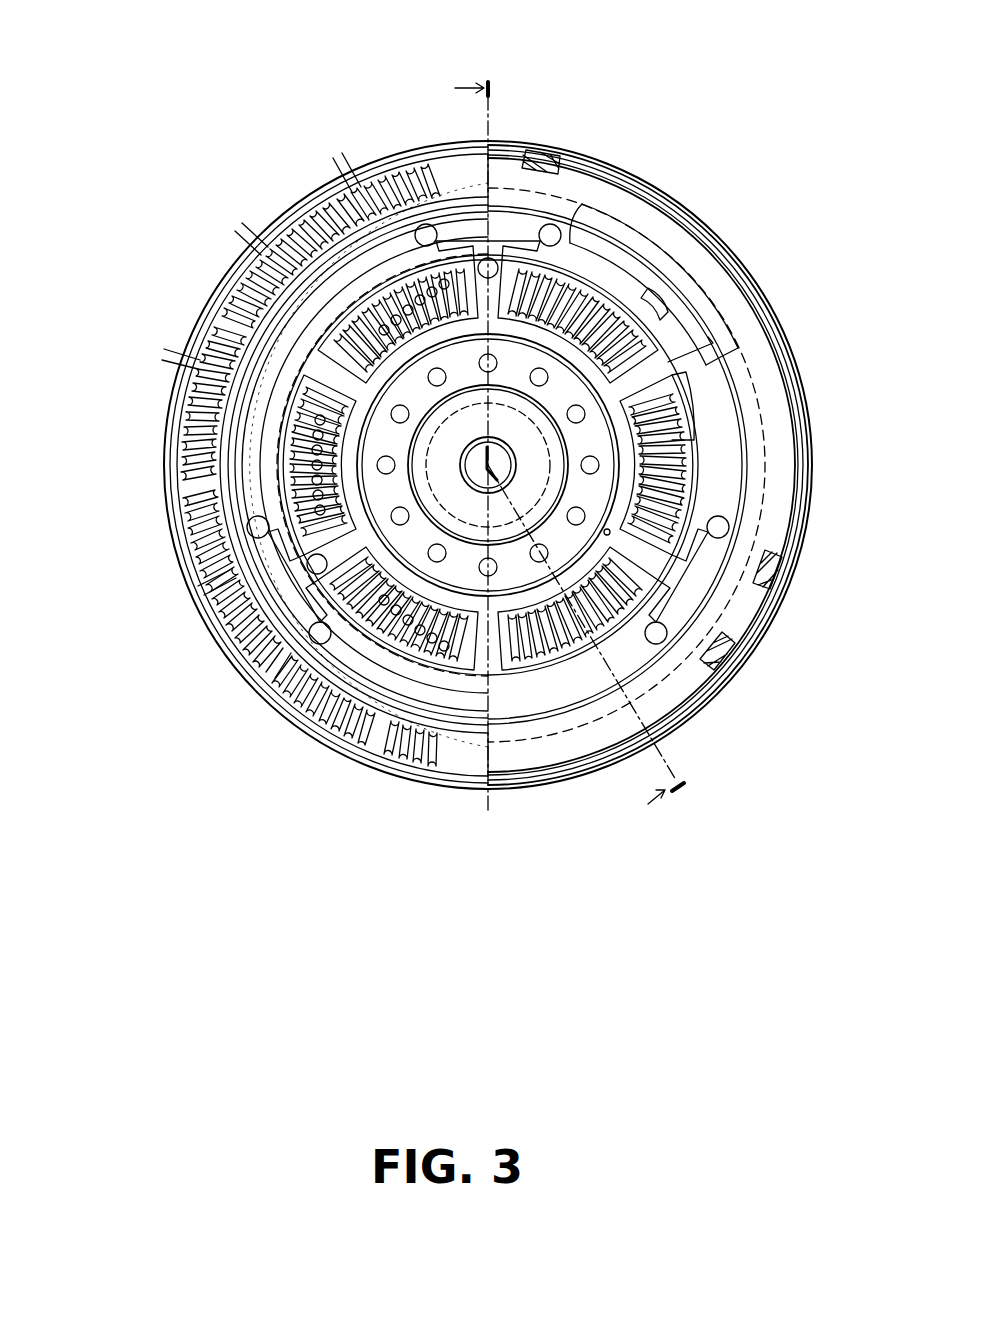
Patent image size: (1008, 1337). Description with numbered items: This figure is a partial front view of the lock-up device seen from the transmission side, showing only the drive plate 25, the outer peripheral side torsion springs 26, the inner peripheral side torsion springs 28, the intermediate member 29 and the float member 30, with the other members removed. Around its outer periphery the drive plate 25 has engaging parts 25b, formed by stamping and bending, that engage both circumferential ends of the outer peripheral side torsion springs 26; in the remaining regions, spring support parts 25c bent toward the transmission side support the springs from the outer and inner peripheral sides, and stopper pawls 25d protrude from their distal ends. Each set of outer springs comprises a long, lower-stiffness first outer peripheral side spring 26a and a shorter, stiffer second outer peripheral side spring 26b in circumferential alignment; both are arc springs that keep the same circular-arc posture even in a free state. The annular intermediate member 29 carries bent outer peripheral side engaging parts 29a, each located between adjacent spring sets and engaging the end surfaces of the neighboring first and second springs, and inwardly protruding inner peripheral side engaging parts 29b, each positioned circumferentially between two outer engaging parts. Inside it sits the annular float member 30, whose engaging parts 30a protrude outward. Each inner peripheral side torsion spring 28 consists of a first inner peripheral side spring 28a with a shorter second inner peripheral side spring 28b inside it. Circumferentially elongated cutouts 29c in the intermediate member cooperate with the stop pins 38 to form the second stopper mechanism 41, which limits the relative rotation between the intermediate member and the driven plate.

The drive plate 25 is at (407, 145).
The engaging parts 25b is at (503, 170).
The spring support parts 25c is at (304, 193).
The stopper pawls 25d is at (345, 185).
The outer peripheral side torsion springs 26 is at (267, 465).
The first outer peripheral side springs 26a is at (213, 303).
The second outer peripheral side springs 26b is at (107, 282).
The inner peripheral side torsion springs 28 is at (474, 574).
The first inner peripheral side spring 28a is at (385, 622).
The second inner peripheral side spring 28b is at (428, 660).
The intermediate member 29 is at (586, 180).
The outer peripheral side engaging parts 29a is at (520, 150).
The inner peripheral side engaging parts 29b is at (665, 358).
The cutouts 29c is at (670, 263).
The float member 30 is at (292, 578).
The engaging parts 30a is at (553, 233).
The stop pins 38 is at (275, 230).
The second stopper mechanism 41 is at (705, 225).